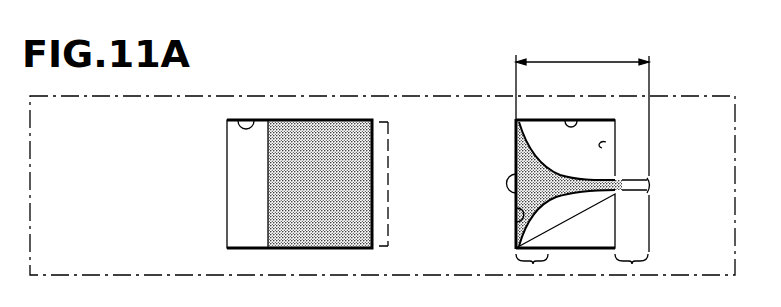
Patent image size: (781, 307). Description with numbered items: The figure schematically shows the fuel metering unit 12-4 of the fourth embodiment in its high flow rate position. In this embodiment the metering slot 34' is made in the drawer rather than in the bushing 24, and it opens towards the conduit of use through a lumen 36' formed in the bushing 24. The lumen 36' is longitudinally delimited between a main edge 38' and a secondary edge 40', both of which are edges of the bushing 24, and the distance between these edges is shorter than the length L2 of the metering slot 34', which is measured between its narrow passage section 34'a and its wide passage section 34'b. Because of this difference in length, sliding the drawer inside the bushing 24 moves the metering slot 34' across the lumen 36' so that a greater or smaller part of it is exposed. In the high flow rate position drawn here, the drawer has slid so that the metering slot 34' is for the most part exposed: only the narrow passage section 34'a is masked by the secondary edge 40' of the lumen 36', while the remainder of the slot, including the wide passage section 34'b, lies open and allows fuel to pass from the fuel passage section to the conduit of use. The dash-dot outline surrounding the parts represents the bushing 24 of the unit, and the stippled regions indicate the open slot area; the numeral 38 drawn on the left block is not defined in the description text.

The fuel metering unit 12-4 is at (668, 73).
The bushing 24 is at (694, 126).
The recess 38 is at (307, 159).
The metering slot 34' is at (556, 184).
The lumen 36' is at (582, 99).
The main edge 38' is at (493, 222).
The secondary edge 40' is at (650, 151).
The narrow passage section 34'a is at (631, 272).
The wide passage section 34'b is at (534, 272).
The length of the metering slot L2 is at (582, 78).